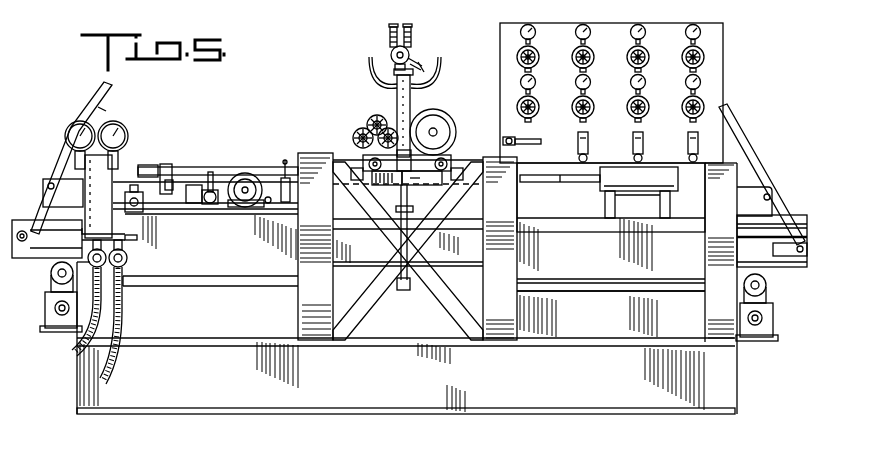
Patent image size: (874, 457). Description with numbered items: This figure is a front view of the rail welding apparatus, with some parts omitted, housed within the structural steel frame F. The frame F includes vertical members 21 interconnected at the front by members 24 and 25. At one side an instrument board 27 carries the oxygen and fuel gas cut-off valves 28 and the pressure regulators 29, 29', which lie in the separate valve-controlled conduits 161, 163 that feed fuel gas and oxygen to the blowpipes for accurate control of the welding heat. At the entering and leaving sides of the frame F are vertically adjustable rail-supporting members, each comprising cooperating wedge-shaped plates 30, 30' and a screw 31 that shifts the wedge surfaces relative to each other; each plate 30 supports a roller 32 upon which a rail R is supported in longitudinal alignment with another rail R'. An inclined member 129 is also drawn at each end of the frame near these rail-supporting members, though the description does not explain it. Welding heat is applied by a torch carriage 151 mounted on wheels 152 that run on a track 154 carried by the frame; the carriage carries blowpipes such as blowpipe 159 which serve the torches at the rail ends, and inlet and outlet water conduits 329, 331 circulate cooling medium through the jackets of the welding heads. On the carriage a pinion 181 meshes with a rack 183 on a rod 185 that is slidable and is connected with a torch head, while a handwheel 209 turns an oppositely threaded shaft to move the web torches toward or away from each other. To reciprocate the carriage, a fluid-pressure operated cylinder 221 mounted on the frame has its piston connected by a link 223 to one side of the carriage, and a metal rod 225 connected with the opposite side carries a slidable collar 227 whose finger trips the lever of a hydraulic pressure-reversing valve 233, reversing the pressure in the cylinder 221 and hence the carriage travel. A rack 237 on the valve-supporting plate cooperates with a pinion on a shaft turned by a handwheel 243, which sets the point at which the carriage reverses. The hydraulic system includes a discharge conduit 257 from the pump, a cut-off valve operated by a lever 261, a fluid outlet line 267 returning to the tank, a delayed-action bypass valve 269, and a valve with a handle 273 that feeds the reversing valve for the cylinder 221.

The vertical members 21 is at (318, 156).
The members 24 is at (198, 328).
The members 25 is at (628, 282).
The instrument board 27 is at (722, 86).
The oxygen and fuel gas cut-off valves 28 is at (634, 156).
The pressure regulator 29 is at (610, 99).
The pressure regulator 29' is at (610, 49).
The wedge-shaped plate 30 is at (393, 313).
The wedge-shaped plate 30' is at (395, 328).
The screw 31 is at (60, 314).
The roller 32 is at (50, 276).
The tilt arm 129 is at (61, 146).
The torch carriage 151 is at (355, 160).
The wheels 152 is at (452, 161).
The track 154 is at (417, 184).
The blowpipe 159 is at (413, 92).
The valve-controlled conduit 161 is at (389, 40).
The valve-controlled conduit 163 is at (412, 38).
The pinion 181 is at (382, 118).
The rack 183 is at (392, 108).
The rod 185 is at (393, 186).
The handwheel 209 is at (445, 120).
The fluid-pressure operated cylinder 221 is at (652, 195).
The link 223 is at (533, 183).
The metal rod 225 is at (150, 165).
The collar 227 is at (171, 196).
The hydraulic pressure-reversing valve 233 is at (190, 185).
The rack 237 is at (268, 206).
The handwheel 243 is at (244, 170).
The discharge conduit 257 is at (72, 358).
The lever 261 is at (212, 180).
The fluid outlet line 267 is at (108, 374).
The delayed-action bypass valve 269 is at (137, 130).
The handle 273 is at (288, 178).
The water conduit 329 is at (371, 62).
The water conduit 331 is at (439, 63).
The rail R is at (47, 218).
The rail R' is at (772, 225).
The frame F is at (135, 418).